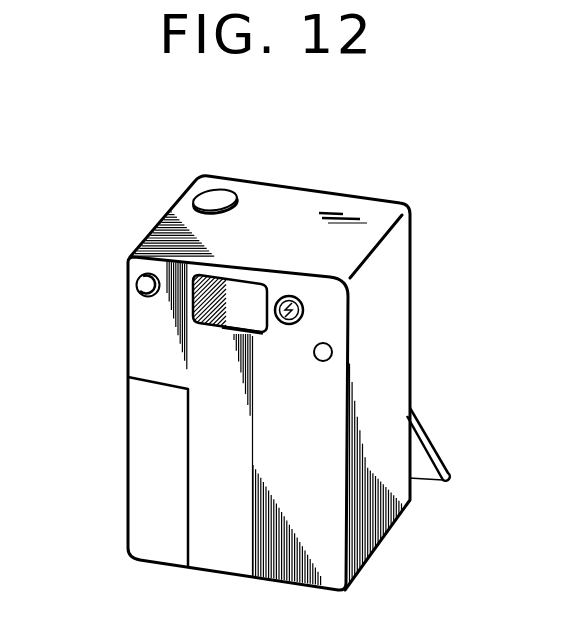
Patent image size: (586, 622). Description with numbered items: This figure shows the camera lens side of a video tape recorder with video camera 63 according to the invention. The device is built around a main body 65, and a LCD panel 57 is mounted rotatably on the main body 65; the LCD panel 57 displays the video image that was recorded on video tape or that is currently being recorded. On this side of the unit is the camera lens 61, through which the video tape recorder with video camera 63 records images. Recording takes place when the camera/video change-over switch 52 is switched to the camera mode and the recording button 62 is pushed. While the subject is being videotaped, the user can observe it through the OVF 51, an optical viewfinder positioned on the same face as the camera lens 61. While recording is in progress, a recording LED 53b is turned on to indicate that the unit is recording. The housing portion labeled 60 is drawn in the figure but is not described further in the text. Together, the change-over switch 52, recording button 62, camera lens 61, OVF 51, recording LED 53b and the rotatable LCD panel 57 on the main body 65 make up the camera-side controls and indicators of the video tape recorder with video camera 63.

The video tape recorder with video camera 63 is at (282, 365).
The housing 60 is at (135, 532).
The main body 65 is at (130, 366).
The OVF 51 is at (200, 326).
The recording button 62 is at (138, 291).
The camera/video change-over switch 52 is at (240, 203).
The camera lens 61 is at (304, 308).
The recording LED 53b is at (333, 347).
The LCD panel 57 is at (430, 437).